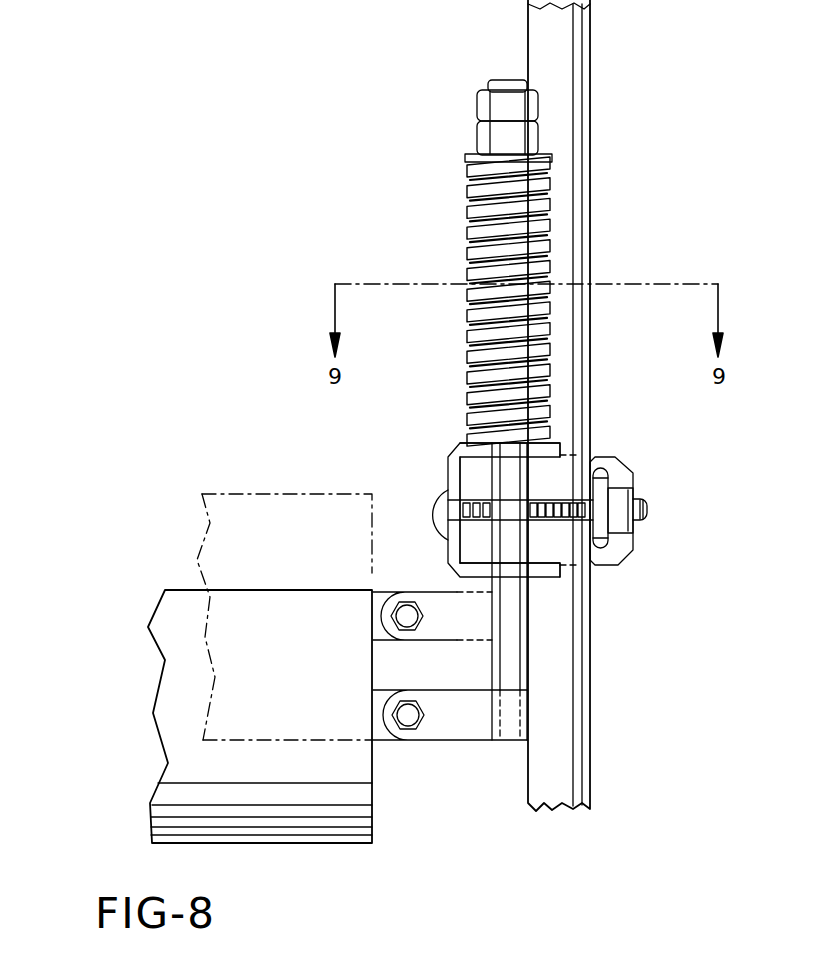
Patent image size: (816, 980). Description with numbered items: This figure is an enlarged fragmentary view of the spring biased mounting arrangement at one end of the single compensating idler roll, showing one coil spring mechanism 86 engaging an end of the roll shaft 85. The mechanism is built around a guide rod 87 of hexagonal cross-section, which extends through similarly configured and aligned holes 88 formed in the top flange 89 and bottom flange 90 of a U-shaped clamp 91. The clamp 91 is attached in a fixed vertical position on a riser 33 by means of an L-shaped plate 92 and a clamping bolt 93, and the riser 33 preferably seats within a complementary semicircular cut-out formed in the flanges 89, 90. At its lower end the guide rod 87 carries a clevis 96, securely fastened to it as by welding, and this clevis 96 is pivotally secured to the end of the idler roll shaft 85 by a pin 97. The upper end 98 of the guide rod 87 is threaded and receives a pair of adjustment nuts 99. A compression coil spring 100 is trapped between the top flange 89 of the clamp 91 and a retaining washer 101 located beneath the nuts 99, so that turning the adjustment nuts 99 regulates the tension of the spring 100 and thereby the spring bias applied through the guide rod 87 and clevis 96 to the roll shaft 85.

The riser 33 is at (577, 48).
The shaft 85 is at (378, 727).
The coil spring mechanism 86 is at (465, 365).
The guide rod 87 is at (505, 215).
The holes 88 is at (535, 456).
The top flange 89 is at (533, 448).
The bottom flange 90 is at (560, 577).
The U-shaped clamp 91 is at (448, 470).
The L-shaped plate 92 is at (600, 488).
The clamping bolt 93 is at (568, 527).
The clevis 96 is at (470, 740).
The pin 97 is at (410, 718).
The upper end 98 is at (465, 203).
The adjustment nuts 99 is at (477, 141).
The compression coil spring 100 is at (465, 252).
The retaining washer 101 is at (463, 157).